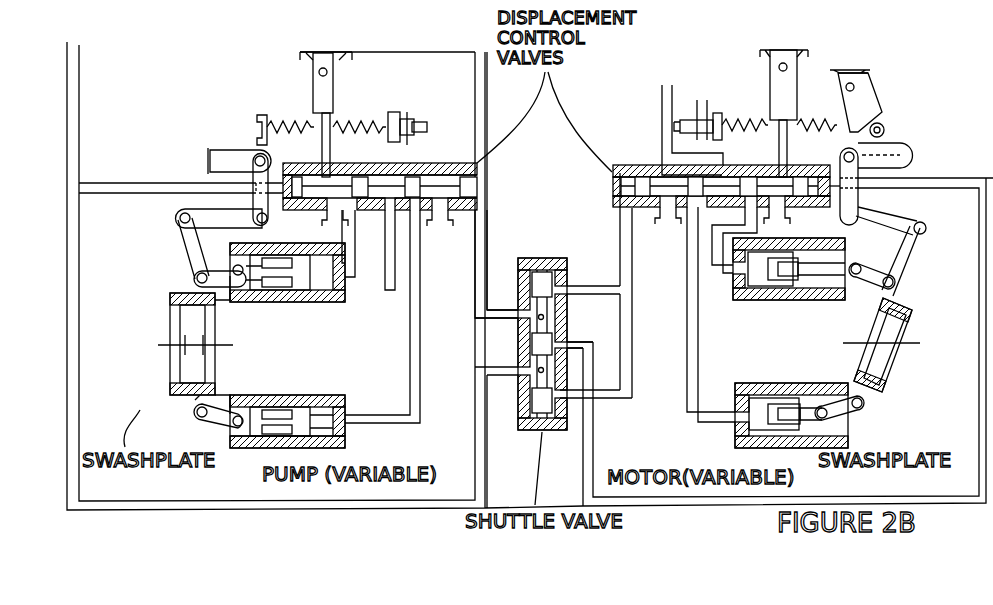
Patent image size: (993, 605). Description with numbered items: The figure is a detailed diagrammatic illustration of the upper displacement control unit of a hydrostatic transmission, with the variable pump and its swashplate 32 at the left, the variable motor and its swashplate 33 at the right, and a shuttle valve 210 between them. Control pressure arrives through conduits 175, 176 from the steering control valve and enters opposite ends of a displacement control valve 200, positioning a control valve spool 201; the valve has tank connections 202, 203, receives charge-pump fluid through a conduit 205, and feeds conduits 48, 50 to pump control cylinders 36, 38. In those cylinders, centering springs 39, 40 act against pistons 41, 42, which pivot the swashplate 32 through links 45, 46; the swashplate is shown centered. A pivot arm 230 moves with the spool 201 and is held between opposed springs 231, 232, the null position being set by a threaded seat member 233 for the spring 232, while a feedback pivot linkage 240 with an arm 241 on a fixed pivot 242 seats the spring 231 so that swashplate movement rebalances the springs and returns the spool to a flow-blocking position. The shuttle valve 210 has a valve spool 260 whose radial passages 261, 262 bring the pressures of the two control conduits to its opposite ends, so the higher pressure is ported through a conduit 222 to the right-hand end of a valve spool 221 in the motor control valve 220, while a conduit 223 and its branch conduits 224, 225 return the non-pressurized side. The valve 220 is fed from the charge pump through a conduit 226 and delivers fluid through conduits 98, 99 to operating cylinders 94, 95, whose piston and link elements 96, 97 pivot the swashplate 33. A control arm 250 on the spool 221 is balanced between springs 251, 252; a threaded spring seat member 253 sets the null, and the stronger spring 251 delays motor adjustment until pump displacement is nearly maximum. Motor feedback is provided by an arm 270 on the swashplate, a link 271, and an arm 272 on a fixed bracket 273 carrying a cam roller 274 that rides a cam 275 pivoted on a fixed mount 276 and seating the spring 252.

The conduit 175 is at (80, 108).
The conduit 176 is at (485, 54).
The displacement control valve 200 is at (445, 163).
The control valve spool 201 is at (468, 190).
The tank connection 202 is at (327, 218).
The tank connection 203 is at (434, 218).
The conduit 205 is at (394, 292).
The shuttle valve 210 is at (520, 260).
The control valve 220 is at (628, 172).
The valve spool 221 is at (662, 218).
The conduit 222 is at (978, 400).
The conduit 223 is at (620, 236).
The branch conduit 224 is at (598, 278).
The branch conduit 225 is at (612, 402).
The conduit 226 is at (662, 108).
The pivot arm 230 is at (318, 82).
The spring 231 is at (289, 123).
The spring 232 is at (352, 122).
The threaded seat member 233 is at (393, 112).
The pivot linkage 240 is at (197, 210).
The arm 241 is at (258, 116).
The fixed pivot 242 is at (228, 150).
The control arm 250 is at (790, 76).
The spring 251 is at (740, 122).
The spring 252 is at (818, 122).
The threaded spring seat member 253 is at (716, 112).
The valve spool 260 is at (532, 345).
The radial passage 261 is at (540, 318).
The radial passage 262 is at (548, 366).
The arm 270 is at (908, 280).
The link 271 is at (924, 216).
The arm 272 is at (862, 196).
The fixed bracket 273 is at (896, 144).
The cam roller 274 is at (884, 126).
The cam 275 is at (882, 104).
The fixed mount 276 is at (862, 72).
The pump swashplate 32 is at (172, 304).
The motor swashplate 33 is at (914, 316).
The pump control cylinder 36 is at (322, 302).
The pump control cylinder 38 is at (346, 402).
The spring construction 39 is at (286, 298).
The spring construction 40 is at (290, 387).
The piston 41 is at (238, 296).
The piston 42 is at (256, 448).
The link 45 is at (195, 262).
The link 46 is at (220, 404).
The conduit 48 is at (352, 278).
The conduit 50 is at (416, 424).
The operating cylinder 94 is at (746, 302).
The operating cylinder 95 is at (742, 388).
The piston and link element 96 is at (804, 258).
The piston and link element 97 is at (816, 384).
The conduit 98 is at (716, 273).
The conduit 99 is at (687, 412).